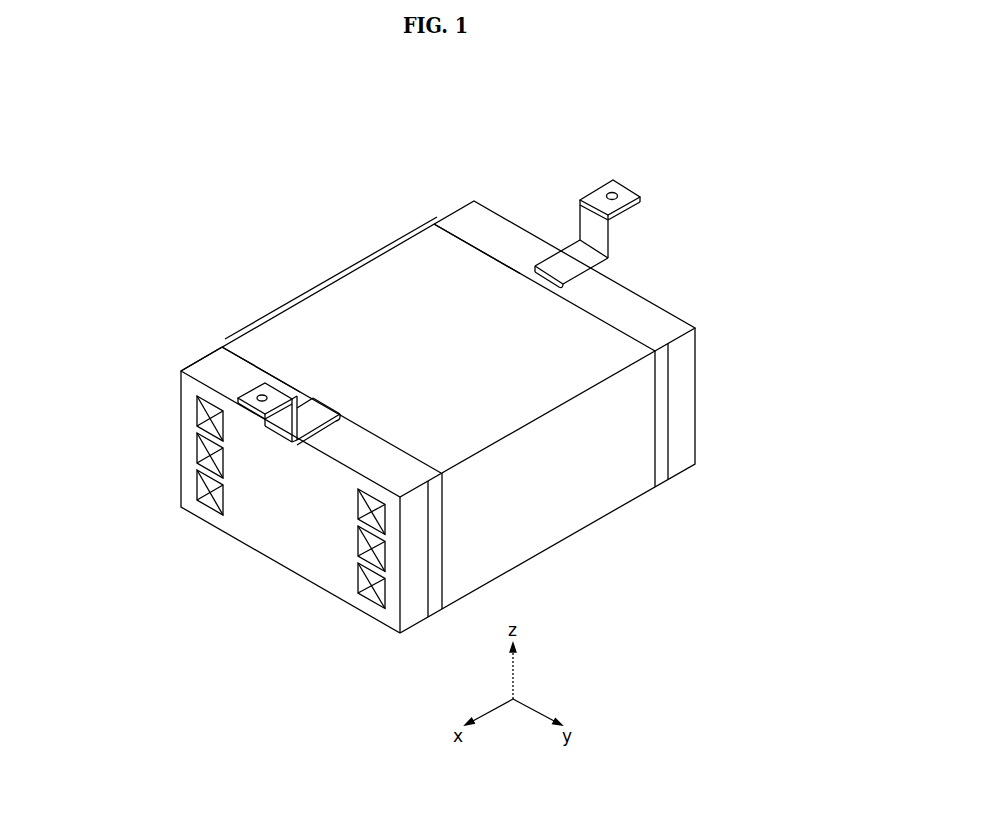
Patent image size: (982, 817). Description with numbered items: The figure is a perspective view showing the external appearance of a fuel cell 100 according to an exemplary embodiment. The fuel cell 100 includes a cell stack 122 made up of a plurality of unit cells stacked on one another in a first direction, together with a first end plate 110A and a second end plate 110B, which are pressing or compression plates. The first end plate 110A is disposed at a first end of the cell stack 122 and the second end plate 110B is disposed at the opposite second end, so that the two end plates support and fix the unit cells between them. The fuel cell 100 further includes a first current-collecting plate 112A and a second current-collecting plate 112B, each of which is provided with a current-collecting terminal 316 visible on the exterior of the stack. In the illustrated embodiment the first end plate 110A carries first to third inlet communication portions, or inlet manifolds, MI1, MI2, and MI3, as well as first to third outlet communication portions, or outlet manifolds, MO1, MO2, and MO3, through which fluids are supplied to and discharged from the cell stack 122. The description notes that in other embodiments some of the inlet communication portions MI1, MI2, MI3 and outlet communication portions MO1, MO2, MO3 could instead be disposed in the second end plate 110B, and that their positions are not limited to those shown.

The fuel cell 100 is at (740, 137).
The first end plate 110A is at (203, 368).
The second end plate 110B is at (477, 215).
The first current-collecting plate 112A is at (220, 352).
The second current-collecting plate 112B is at (448, 226).
The cell stack 122 is at (315, 291).
The current-collecting terminal 316 is at (280, 395).
The first inlet communication portion MI1 is at (202, 413).
The second inlet communication portion MI2 is at (202, 451).
The third inlet communication portion MI3 is at (377, 517).
The first outlet communication portion MO1 is at (376, 592).
The second outlet communication portion MO2 is at (377, 548).
The third outlet communication portion MO3 is at (202, 488).